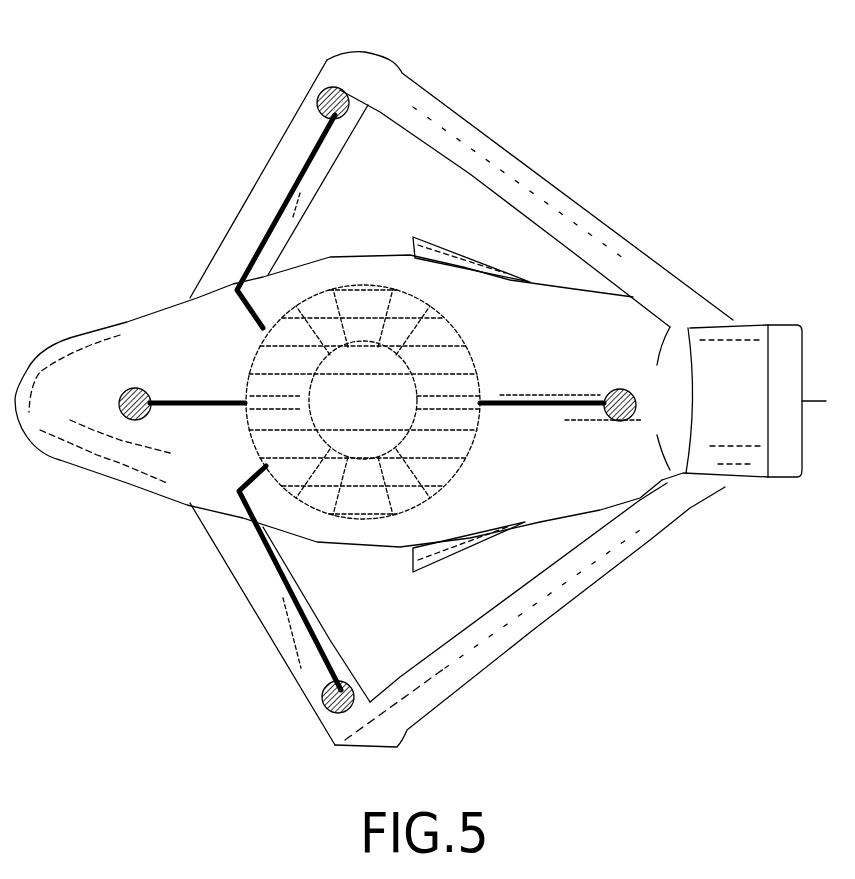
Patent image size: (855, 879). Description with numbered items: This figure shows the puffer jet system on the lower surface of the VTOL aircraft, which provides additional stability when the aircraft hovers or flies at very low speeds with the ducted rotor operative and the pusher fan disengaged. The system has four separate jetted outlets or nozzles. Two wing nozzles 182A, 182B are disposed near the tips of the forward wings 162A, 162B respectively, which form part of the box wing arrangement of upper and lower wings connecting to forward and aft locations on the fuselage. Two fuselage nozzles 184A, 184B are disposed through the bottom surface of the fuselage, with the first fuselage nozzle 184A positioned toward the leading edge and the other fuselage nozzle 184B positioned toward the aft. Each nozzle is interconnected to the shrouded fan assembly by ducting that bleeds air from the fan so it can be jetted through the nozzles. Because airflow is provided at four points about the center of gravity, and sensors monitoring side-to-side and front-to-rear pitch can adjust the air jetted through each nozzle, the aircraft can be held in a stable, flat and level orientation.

The forward wing 162A is at (320, 613).
The forward wing 162B is at (322, 181).
The wing nozzle 182A is at (318, 100).
The wing nozzle 182B is at (322, 700).
The fuselage nozzle 184A is at (137, 388).
The fuselage nozzle 184B is at (622, 420).